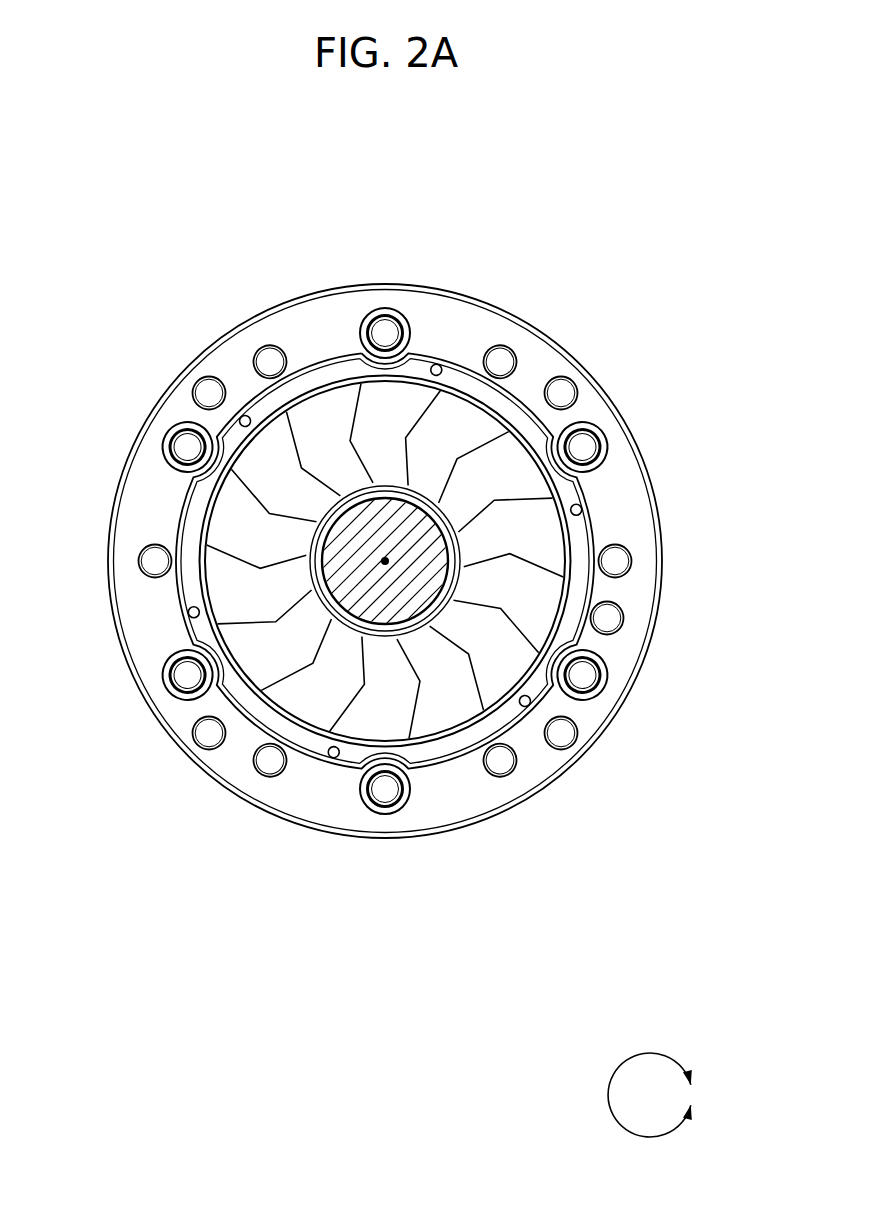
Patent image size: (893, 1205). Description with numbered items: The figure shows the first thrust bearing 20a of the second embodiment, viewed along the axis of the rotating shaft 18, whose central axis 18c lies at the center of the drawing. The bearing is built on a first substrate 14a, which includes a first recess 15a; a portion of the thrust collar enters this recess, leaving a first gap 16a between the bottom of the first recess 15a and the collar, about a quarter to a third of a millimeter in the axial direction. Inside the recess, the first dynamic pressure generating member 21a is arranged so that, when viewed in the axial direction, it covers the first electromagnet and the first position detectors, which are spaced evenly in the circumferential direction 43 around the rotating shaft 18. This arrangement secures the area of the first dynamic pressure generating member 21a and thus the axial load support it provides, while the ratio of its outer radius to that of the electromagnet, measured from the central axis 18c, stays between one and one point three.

The first thrust bearing 20a is at (586, 251).
The first dynamic pressure generating member 21a is at (445, 430).
The central axis 18c is at (385, 561).
The first substrate 14a is at (630, 532).
The first recess 15a is at (583, 593).
The rotating shaft 18 is at (347, 582).
The first gap 16a is at (490, 658).
The circumferential direction 43 is at (650, 1053).